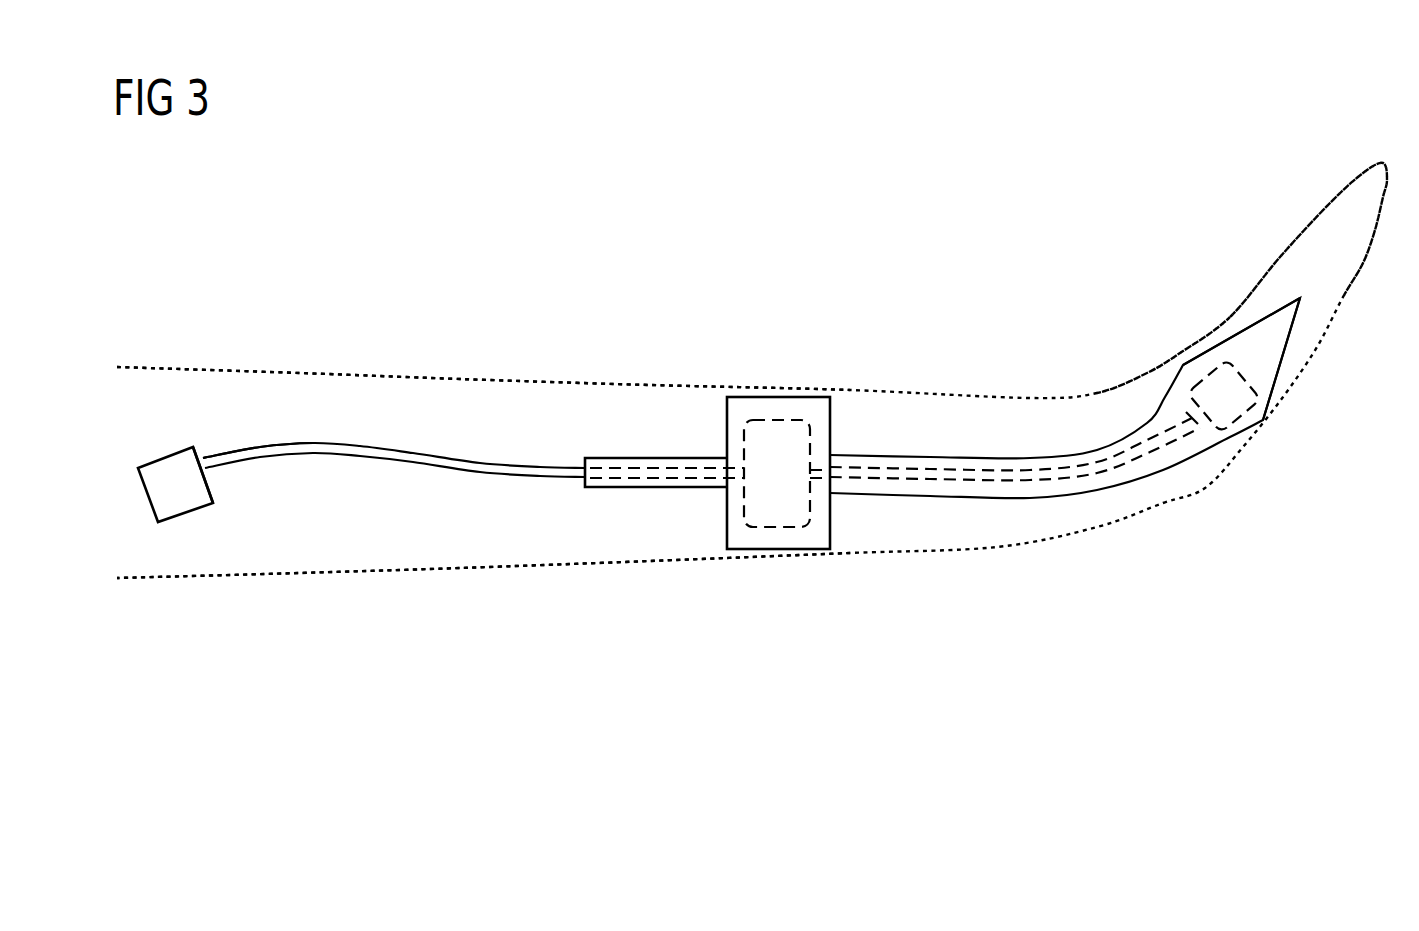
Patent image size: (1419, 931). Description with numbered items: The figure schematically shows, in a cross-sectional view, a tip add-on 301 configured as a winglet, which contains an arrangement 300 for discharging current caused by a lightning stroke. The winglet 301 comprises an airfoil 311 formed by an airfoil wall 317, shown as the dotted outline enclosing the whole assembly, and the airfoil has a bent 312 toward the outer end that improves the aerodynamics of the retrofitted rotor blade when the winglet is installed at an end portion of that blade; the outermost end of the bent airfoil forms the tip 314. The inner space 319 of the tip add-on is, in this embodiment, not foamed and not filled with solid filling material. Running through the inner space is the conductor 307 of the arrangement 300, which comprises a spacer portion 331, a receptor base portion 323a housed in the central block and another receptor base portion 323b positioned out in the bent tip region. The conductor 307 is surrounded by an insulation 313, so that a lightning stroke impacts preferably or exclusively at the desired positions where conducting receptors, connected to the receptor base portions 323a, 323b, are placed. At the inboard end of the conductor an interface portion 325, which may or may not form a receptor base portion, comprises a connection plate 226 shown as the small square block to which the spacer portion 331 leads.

The arrangement for discharging current 300 is at (743, 418).
The tip add-on 301 is at (1226, 177).
The conductor 307 is at (718, 451).
The airfoil 311 is at (678, 381).
The bent 312 is at (1150, 339).
The insulation 313 is at (788, 449).
The blade tip 314 is at (1291, 292).
The airfoil wall 317 is at (578, 382).
The inner space 319 is at (390, 513).
The receptor base portion 323a is at (783, 418).
The another receptor base portion 323b is at (1247, 410).
The interface portion 325 is at (213, 446).
The spacer portion 331 is at (490, 468).
The connection plate 226 is at (197, 487).